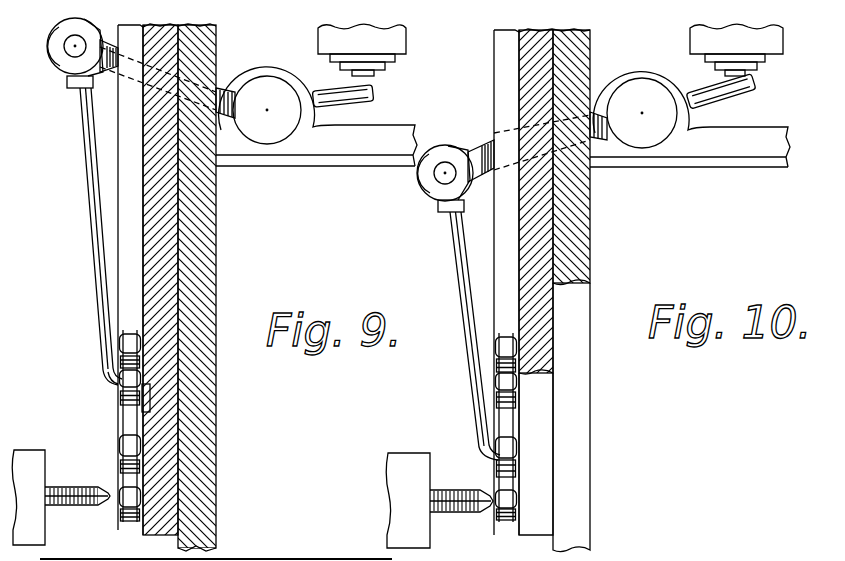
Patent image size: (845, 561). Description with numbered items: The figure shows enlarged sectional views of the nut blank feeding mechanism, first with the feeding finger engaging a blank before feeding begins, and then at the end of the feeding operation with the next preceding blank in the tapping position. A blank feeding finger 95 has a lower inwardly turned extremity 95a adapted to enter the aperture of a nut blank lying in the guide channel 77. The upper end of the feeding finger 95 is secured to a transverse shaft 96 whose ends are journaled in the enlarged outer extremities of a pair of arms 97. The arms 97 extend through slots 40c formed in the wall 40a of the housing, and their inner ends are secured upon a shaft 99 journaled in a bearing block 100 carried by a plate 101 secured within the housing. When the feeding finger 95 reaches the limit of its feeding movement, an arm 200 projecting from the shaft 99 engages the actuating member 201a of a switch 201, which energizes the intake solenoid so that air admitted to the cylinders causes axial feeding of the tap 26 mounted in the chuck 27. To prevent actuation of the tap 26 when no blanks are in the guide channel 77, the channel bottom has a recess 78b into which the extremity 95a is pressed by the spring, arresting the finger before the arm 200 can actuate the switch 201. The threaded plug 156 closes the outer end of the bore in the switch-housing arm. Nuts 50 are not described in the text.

In FIG. 9, the tap 26 is at (65, 486).
In FIG. 10, the tap 26 is at (448, 490).
In FIG. 9, the chuck 27 is at (28, 458).
In FIG. 10, the chuck 27 is at (407, 462).
In FIG. 9, the wall of the housing 40a is at (213, 288).
In FIG. 10, the wall of the housing 40a is at (583, 291).
In FIG. 9, the slots 40c is at (284, 201).
In FIG. 10, the slots 40c is at (641, 55).
In FIG. 9, the nut and washer stack 50 is at (122, 343).
In FIG. 10, the nut and washer stack 50 is at (512, 458).
In FIG. 9, the guide channel 77 is at (118, 233).
In FIG. 10, the guide channel 77 is at (494, 270).
In FIG. 9, the recess 78b is at (148, 400).
In FIG. 9, the blank feeding finger 95 is at (97, 268).
In FIG. 10, the blank feeding finger 95 is at (476, 327).
In FIG. 9, the inwardly turned extremity 95a is at (118, 384).
In FIG. 9, the transverse shaft 96 is at (73, 47).
In FIG. 10, the transverse shaft 96 is at (446, 173).
In FIG. 9, the arms 97 is at (100, 72).
In FIG. 10, the arms 97 is at (475, 155).
In FIG. 9, the shaft 99 is at (283, 119).
In FIG. 10, the shaft 99 is at (652, 134).
In FIG. 9, the bearing block 100 is at (348, 140).
In FIG. 10, the bearing block 100 is at (762, 143).
In FIG. 9, the plate 101 is at (312, 167).
In FIG. 10, the plate 101 is at (712, 168).
In FIG. 9, the threaded plug 156 is at (312, 558).
In FIG. 9, the arm 200 is at (373, 107).
In FIG. 10, the arm 200 is at (723, 96).
In FIG. 9, the switch 201 is at (390, 40).
In FIG. 10, the switch 201 is at (703, 38).
In FIG. 9, the actuating member 201a is at (377, 72).
In FIG. 10, the actuating member 201a is at (735, 65).